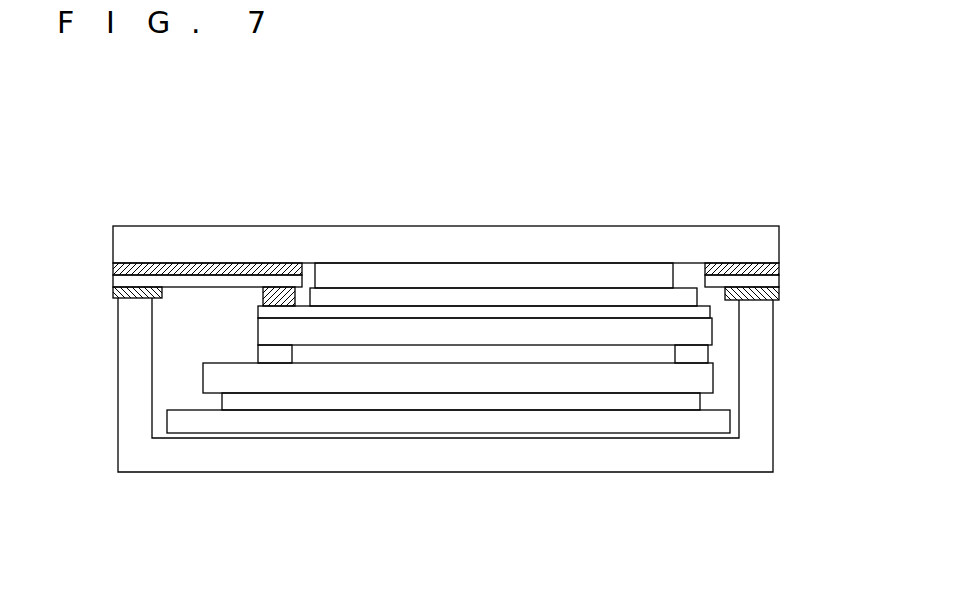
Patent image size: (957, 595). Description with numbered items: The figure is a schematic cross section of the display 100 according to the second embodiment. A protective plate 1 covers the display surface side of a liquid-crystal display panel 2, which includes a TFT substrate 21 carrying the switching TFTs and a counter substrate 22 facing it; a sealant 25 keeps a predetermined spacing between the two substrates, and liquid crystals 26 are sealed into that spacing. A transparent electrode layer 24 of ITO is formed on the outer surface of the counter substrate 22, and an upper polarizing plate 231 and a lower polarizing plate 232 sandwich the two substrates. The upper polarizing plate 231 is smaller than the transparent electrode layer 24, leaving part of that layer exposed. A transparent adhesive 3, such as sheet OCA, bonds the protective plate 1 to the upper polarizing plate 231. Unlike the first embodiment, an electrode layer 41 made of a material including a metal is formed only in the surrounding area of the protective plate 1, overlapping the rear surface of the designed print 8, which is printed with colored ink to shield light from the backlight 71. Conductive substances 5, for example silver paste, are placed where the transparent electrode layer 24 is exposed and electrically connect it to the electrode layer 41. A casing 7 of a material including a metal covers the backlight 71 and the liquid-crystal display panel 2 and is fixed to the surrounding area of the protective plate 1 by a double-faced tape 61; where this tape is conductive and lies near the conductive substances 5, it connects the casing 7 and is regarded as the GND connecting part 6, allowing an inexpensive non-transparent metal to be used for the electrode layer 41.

The protective plate 1 is at (768, 243).
The electrode layer 41 is at (211, 268).
The designed print 8 is at (161, 268).
The GND connecting part 6 is at (419, 327).
The double-faced tape 61 is at (112, 292).
The conductive substances 5 is at (280, 300).
The transparent adhesive 3 is at (613, 282).
The upper polarizing plate 231 is at (517, 297).
The transparent electrode layer 24 is at (412, 310).
The liquid-crystal display panel 2 is at (533, 357).
The counter substrate 22 is at (700, 333).
The TFT substrate 21 is at (700, 380).
The sealant 25 is at (269, 353).
The liquid crystals 26 is at (360, 353).
The lower polarizing plate 232 is at (639, 402).
The backlight 71 is at (550, 420).
The casing 7 is at (760, 453).
The display 100 is at (461, 381).